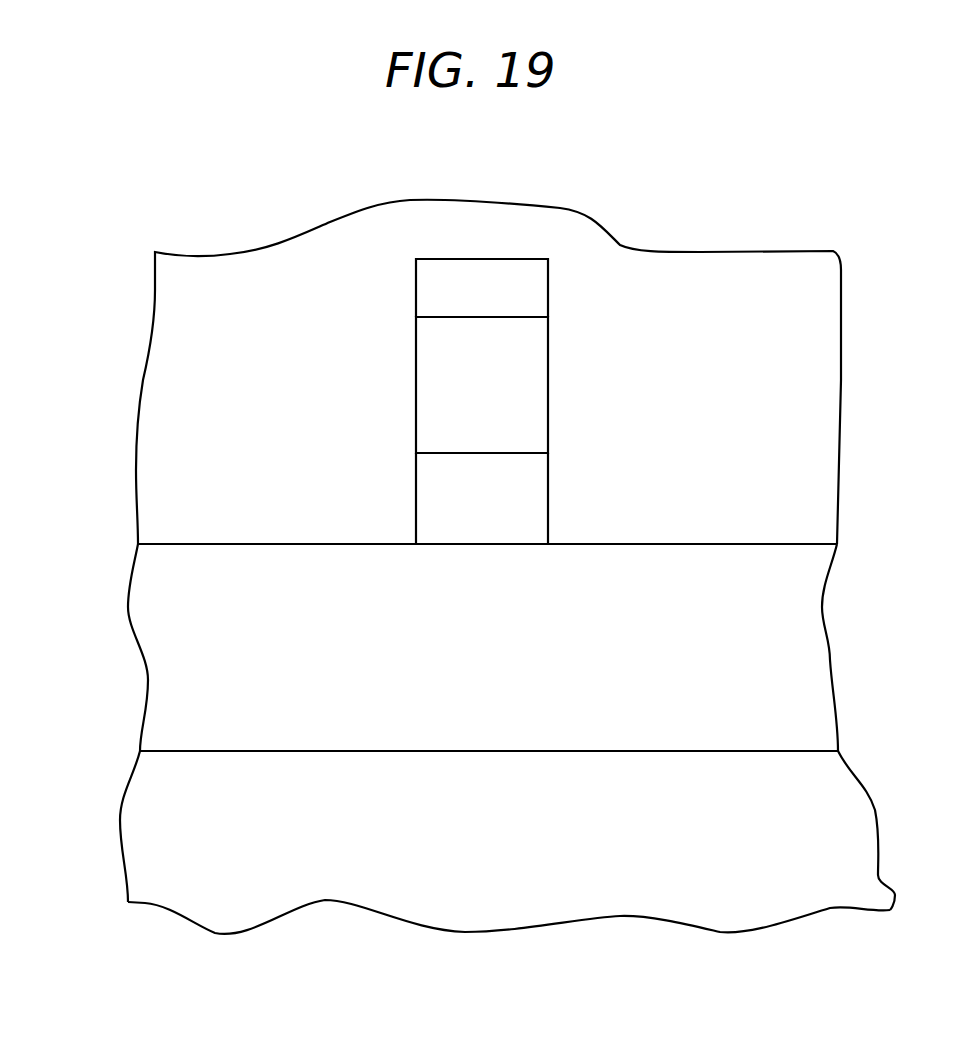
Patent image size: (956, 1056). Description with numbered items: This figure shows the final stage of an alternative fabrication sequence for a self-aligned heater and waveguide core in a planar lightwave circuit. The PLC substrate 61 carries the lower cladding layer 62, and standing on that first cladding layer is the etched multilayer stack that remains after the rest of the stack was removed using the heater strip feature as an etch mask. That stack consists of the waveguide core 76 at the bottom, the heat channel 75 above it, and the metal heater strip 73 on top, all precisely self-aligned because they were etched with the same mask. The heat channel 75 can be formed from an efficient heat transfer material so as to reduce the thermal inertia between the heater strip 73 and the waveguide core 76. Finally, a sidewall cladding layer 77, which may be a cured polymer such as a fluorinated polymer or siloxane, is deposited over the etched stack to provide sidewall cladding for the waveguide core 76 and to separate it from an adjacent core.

The PLC substrate 61 is at (143, 842).
The lower cladding layer 62 is at (128, 607).
The heater strip 73 is at (413, 280).
The heat channel 75 is at (416, 383).
The waveguide core 76 is at (416, 503).
The sidewall cladding layer 77 is at (277, 243).